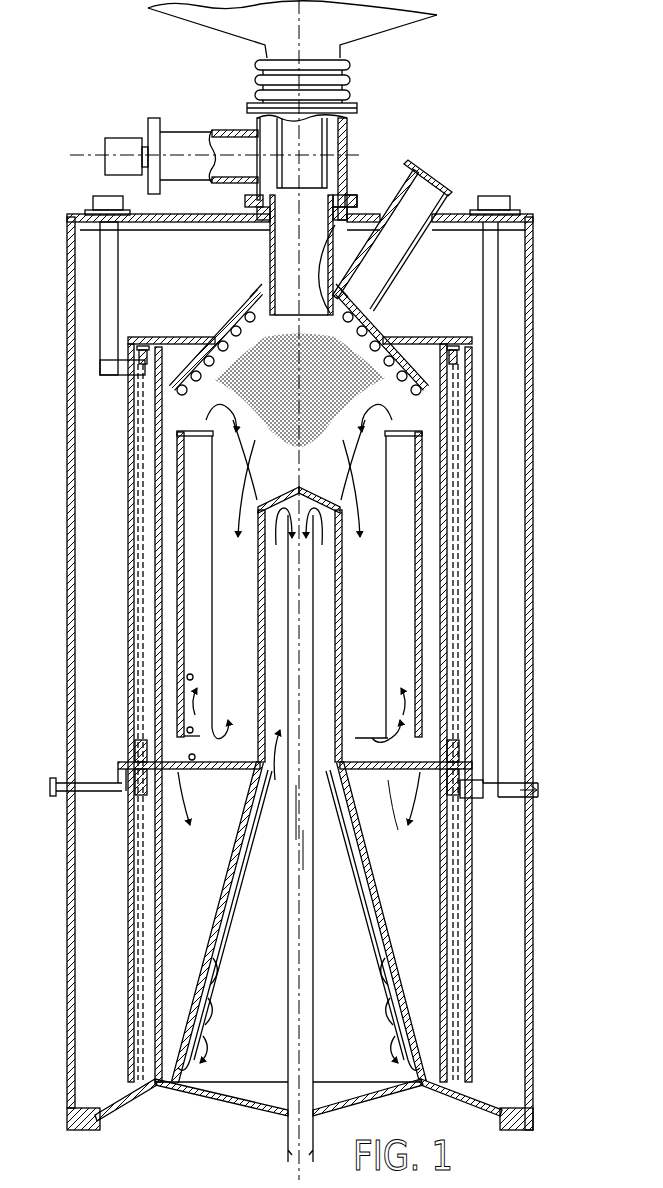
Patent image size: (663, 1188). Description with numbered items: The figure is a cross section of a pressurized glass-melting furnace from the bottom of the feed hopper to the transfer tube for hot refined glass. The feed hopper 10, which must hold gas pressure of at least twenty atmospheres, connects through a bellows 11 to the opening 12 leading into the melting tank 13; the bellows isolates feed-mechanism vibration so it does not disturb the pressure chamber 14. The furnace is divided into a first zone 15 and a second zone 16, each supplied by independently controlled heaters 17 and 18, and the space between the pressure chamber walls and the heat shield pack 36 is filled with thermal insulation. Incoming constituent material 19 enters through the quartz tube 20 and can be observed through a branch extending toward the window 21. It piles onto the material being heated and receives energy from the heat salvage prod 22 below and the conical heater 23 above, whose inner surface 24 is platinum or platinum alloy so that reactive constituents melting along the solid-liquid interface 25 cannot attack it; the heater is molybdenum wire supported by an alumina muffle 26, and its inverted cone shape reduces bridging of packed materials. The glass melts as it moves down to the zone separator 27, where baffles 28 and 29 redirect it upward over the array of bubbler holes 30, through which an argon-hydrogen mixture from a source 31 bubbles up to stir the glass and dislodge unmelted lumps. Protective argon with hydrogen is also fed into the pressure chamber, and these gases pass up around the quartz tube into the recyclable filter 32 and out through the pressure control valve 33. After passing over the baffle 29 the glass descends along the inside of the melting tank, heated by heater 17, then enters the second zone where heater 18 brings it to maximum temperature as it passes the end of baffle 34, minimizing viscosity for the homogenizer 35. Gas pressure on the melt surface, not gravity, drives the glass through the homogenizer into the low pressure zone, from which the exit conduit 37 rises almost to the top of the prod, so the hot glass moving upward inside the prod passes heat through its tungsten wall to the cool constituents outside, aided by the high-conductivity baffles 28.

The feed hopper 10 is at (384, 31).
The bellows 11 is at (350, 63).
The opening 12 is at (330, 135).
The melting tank 13 is at (155, 478).
The pressure chamber 14 is at (67, 356).
The first zone 15 is at (400, 430).
The second zone 16 is at (410, 853).
The heater 17 is at (140, 389).
The heater 18 is at (140, 847).
The constituent material 19 is at (338, 310).
The quartz tube 20 is at (333, 196).
The window 21 is at (417, 167).
The heat salvage prod 22 is at (345, 520).
The conical heater 23 is at (360, 332).
The inner surface 24 is at (392, 345).
The solid-liquid interface 25 is at (397, 420).
The alumina muffle 26 is at (455, 358).
The zone separator 27 is at (473, 763).
The baffles 28 is at (210, 600).
The baffle 29 is at (186, 730).
The bubbler holes 30 is at (190, 762).
The source 31 is at (58, 792).
The recyclable filter 32 is at (178, 130).
The pressure control valve 33 is at (117, 137).
The baffle 34 is at (200, 955).
The homogenizer 35 is at (390, 893).
The heat shield pack 36 is at (472, 520).
The exit conduit 37 is at (285, 893).